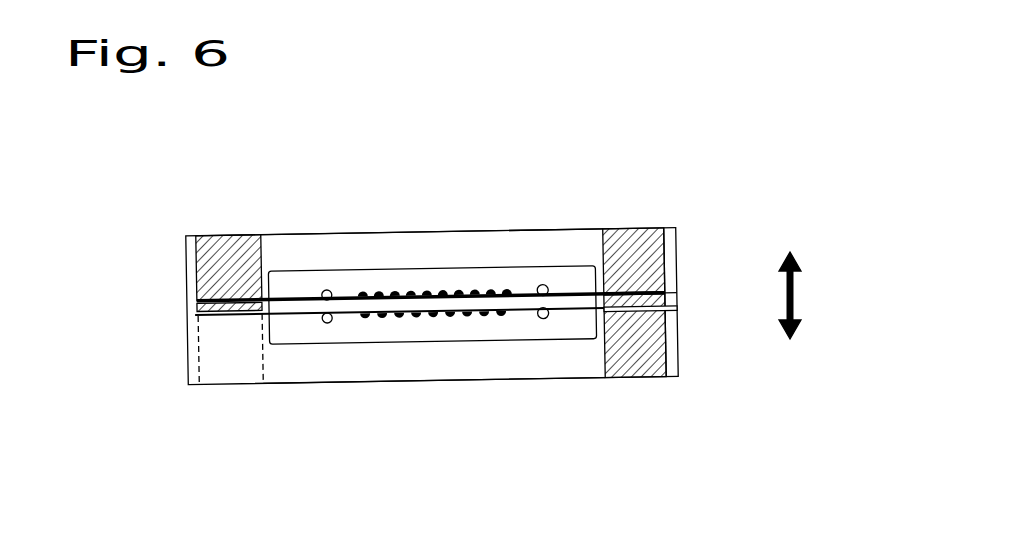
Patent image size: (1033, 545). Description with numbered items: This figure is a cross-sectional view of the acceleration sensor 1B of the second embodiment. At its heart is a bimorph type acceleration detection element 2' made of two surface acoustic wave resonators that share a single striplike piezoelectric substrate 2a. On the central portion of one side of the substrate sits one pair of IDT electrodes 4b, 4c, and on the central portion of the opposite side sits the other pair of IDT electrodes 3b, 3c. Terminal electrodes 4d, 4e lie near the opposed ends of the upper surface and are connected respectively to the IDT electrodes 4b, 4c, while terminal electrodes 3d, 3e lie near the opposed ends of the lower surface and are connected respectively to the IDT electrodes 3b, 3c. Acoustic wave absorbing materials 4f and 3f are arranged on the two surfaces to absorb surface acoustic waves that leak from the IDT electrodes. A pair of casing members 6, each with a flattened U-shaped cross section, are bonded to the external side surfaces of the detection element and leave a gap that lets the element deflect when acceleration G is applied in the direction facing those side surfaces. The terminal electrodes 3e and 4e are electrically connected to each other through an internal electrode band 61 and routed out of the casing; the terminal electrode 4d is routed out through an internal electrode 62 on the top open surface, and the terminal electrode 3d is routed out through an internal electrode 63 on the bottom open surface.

The acceleration sensor 1B is at (150, 207).
The casing member 6 is at (366, 240).
The internal electrode 62 is at (212, 234).
The internal electrode band 61 is at (640, 229).
The internal electrode 63 is at (187, 354).
The terminal electrode 4d is at (214, 297).
The terminal electrode 3d is at (216, 323).
The terminal electrode 4e is at (655, 277).
The terminal electrode 3e is at (640, 312).
The bimorph type acceleration detection element 2' is at (432, 240).
The acoustic wave absorbing material 4f is at (325, 289).
The acoustic wave absorbing material 3f is at (328, 323).
The piezoelectric substrate 2a is at (522, 299).
The IDT electrode 4b is at (435, 233).
The IDT electrode 4c is at (437, 289).
The IDT electrode 3b is at (433, 380).
The IDT electrode 3c is at (405, 320).
The acceleration G is at (808, 295).